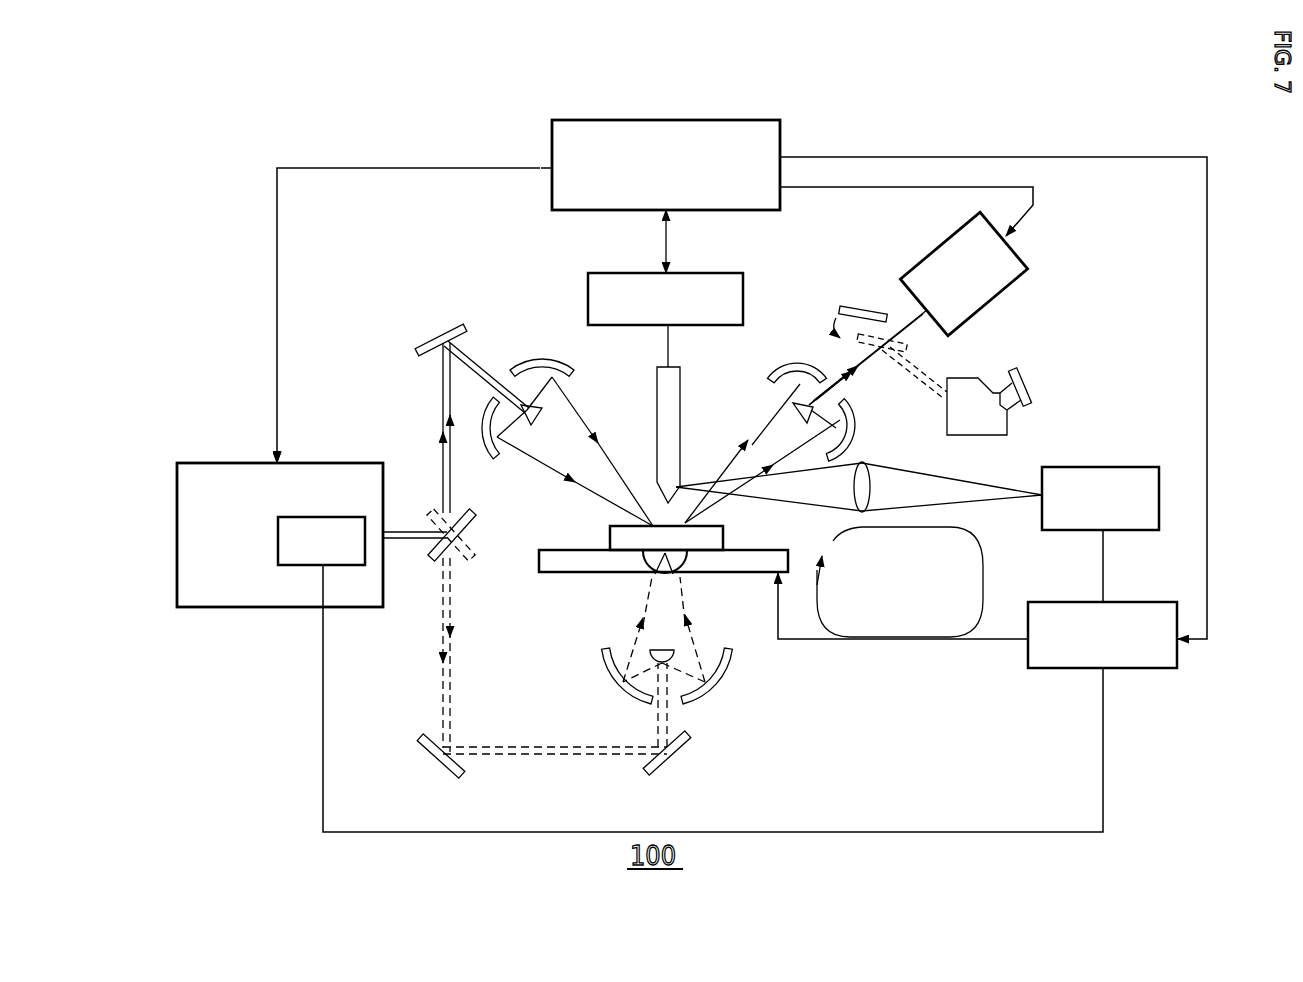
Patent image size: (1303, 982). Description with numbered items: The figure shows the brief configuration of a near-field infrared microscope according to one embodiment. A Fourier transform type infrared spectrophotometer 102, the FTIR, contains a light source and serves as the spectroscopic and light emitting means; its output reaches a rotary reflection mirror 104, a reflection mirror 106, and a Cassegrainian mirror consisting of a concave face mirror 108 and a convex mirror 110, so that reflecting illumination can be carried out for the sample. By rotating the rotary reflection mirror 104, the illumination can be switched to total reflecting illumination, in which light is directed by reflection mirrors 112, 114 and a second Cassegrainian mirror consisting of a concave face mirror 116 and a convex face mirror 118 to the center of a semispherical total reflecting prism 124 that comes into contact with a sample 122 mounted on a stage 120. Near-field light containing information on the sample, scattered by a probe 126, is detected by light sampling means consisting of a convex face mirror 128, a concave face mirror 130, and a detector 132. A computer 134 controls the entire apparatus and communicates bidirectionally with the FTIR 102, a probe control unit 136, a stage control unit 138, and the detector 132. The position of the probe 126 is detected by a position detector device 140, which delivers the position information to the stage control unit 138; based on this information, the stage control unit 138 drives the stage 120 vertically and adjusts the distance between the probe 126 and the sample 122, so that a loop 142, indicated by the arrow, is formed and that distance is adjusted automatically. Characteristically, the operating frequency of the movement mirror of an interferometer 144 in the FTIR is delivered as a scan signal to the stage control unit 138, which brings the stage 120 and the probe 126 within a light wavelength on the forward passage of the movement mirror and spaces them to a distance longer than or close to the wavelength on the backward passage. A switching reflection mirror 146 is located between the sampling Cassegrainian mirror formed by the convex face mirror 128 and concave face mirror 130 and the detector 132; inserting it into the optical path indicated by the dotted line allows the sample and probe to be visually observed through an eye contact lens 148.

The Fourier transform type infrared spectrophotometer 102 is at (340, 463).
The rotary reflection mirror 104 is at (474, 518).
The reflection mirror 106 is at (456, 327).
The concave face mirror 108 is at (536, 362).
The convex mirror 110 is at (533, 418).
The reflection mirror 112 is at (443, 769).
The reflection mirror 114 is at (686, 745).
The concave face mirror 116 is at (730, 680).
The convex face mirror 118 is at (652, 652).
The stage 120 is at (555, 572).
The sample 122 is at (723, 536).
The semispherical total reflecting prism 124 is at (684, 560).
The probe 126 is at (672, 383).
The convex face mirror 128 is at (783, 412).
The concave face mirror 130 is at (852, 430).
The detector 132 is at (1019, 280).
The computer 134 is at (552, 127).
The probe control unit 136 is at (705, 273).
The stage control unit 138 is at (1137, 602).
The position detector device 140 is at (1115, 467).
The loop 142 is at (958, 528).
The interferometer 144 is at (322, 517).
The switching reflection mirror 146 is at (857, 308).
The eye contact lens 148 is at (1030, 383).